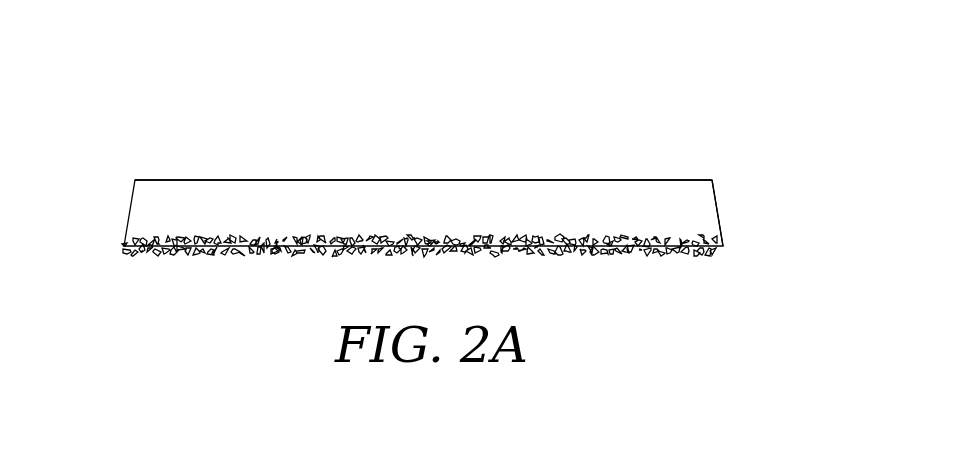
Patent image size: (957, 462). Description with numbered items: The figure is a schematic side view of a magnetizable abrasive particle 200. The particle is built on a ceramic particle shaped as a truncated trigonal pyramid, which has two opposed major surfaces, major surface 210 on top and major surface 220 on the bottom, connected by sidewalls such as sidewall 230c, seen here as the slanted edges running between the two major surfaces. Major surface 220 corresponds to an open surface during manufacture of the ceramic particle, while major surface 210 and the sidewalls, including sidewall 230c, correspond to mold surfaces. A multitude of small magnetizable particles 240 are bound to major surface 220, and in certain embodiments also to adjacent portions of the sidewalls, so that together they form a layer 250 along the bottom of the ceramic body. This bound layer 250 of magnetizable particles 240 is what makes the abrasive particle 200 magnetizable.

The magnetizable abrasive particle 200 is at (424, 191).
The major surface 210 is at (423, 177).
The major surface 220 is at (168, 250).
The sidewall 230c is at (442, 180).
The magnetizable particles 240 is at (302, 236).
The layer 250 is at (720, 251).